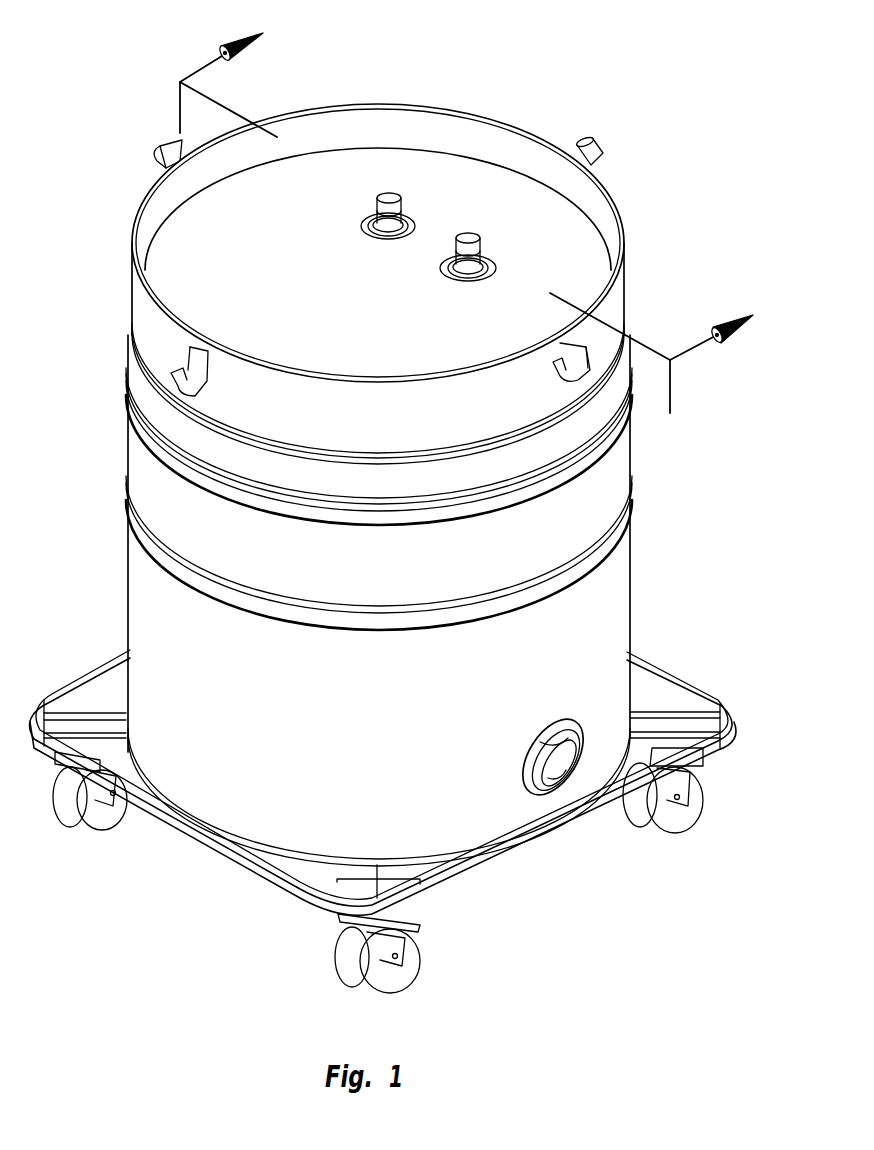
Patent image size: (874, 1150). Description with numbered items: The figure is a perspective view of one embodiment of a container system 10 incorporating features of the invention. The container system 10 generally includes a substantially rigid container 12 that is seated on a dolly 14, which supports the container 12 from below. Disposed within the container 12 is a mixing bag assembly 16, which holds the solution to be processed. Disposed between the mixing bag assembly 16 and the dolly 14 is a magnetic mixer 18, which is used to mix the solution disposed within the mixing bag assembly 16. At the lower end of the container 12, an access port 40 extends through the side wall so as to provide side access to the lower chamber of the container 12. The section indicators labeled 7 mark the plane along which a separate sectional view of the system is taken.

The section line 7- 7 is at (479, 210).
The container system 10 is at (383, 525).
The container 12 is at (613, 452).
The dolly 14 is at (443, 900).
The mixing bag assembly 16 is at (513, 190).
The magnetic mixer 18 is at (557, 767).
The access port 40 is at (552, 783).